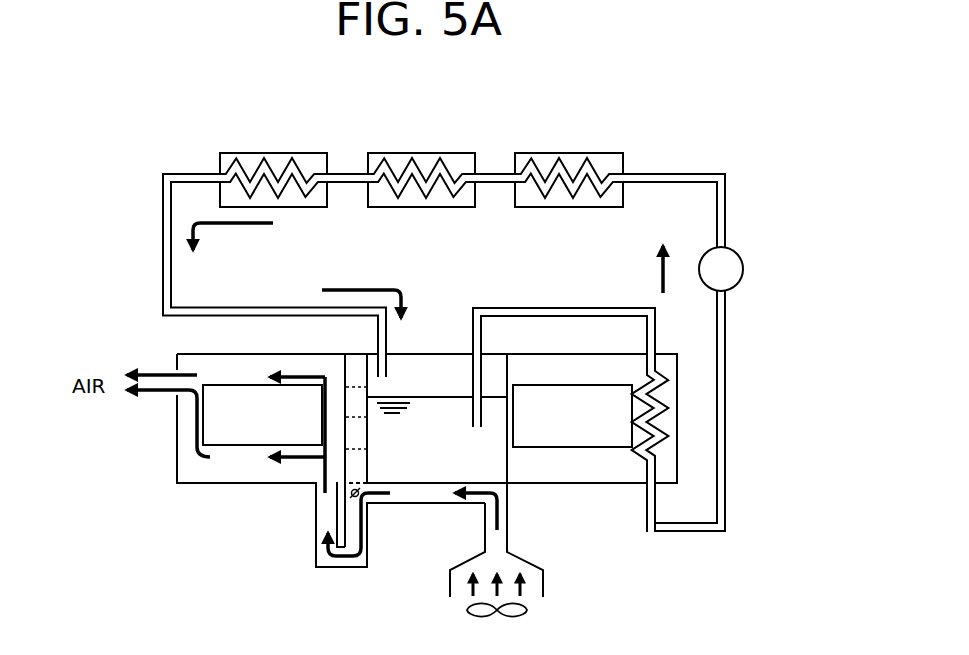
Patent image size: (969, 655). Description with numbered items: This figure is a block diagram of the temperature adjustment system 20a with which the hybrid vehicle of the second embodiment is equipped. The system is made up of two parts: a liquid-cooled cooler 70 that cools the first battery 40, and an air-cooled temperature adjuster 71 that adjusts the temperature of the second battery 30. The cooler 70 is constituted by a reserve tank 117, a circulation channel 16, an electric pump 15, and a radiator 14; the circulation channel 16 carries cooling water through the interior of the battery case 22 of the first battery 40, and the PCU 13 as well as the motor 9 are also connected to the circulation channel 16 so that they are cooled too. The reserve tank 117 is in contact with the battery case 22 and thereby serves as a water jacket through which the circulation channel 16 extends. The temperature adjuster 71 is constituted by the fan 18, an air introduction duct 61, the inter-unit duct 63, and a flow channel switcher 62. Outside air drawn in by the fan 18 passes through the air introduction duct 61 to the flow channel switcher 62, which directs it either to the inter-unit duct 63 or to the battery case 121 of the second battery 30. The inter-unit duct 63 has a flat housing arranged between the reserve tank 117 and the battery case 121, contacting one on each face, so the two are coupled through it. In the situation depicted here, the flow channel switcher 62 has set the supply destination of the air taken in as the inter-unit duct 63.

The temperature adjustment system 20a is at (207, 99).
The motor 9 is at (303, 151).
The PCU 13 is at (449, 151).
The radiator 14 is at (598, 151).
The electric pump 15 is at (731, 251).
The circulation channel 16 is at (560, 308).
The cooler 70 is at (356, 262).
The reserve tank 117 is at (430, 353).
The battery case 121 is at (167, 460).
The second battery 30 is at (235, 448).
The first battery 40 is at (563, 448).
The battery case 22 is at (607, 487).
The air introduction duct 61 is at (433, 505).
The flow channel switcher 62 is at (380, 505).
The inter-unit duct 63 is at (353, 462).
The fan 18 is at (512, 617).
The temperature adjuster 71 is at (228, 584).